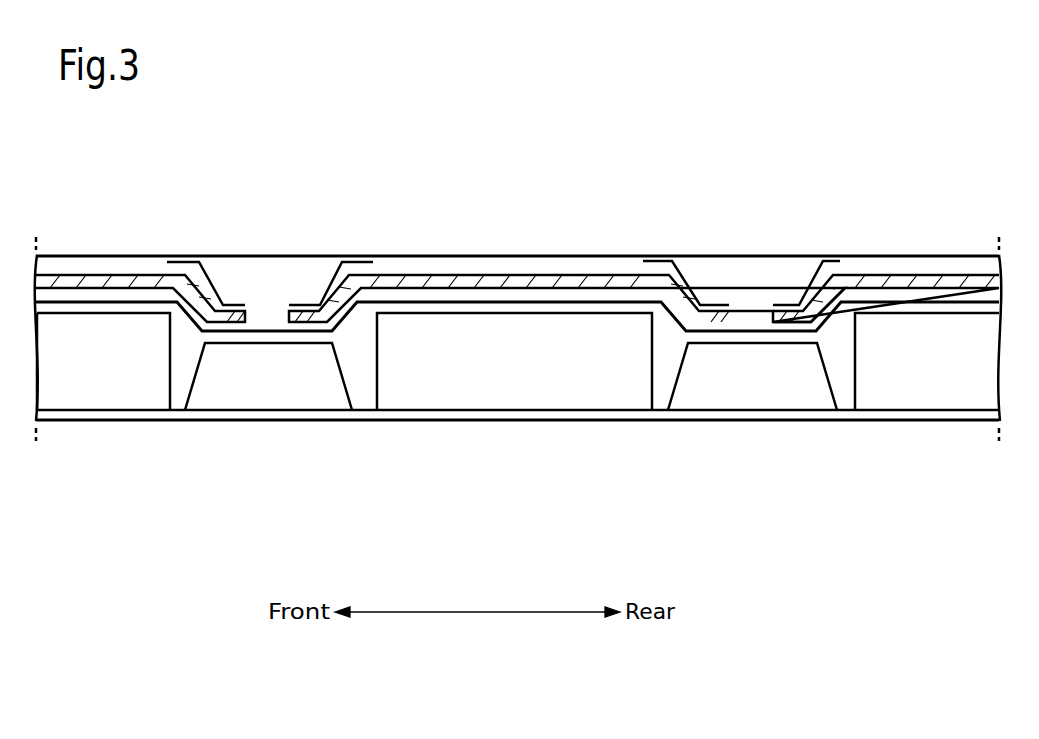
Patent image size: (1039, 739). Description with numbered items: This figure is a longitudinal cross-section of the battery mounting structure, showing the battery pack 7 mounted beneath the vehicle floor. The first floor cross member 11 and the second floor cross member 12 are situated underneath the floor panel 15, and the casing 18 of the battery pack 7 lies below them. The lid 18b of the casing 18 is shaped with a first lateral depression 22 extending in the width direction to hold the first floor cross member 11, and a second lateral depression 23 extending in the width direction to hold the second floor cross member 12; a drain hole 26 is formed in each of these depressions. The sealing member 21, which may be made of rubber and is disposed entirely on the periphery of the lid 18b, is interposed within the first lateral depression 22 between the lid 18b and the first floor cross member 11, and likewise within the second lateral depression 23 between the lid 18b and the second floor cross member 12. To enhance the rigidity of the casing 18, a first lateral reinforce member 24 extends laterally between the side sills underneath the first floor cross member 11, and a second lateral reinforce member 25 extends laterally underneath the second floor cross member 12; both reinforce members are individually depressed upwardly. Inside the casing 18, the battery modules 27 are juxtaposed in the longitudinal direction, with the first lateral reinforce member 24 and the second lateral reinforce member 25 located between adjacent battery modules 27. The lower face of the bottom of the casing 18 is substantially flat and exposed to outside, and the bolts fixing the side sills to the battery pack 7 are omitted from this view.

The battery pack 7 is at (892, 424).
The first floor cross member 11 is at (215, 287).
The second floor cross member 12 is at (817, 270).
The floor panel 15 is at (931, 255).
The casing 18 is at (686, 421).
The lid 18b is at (972, 297).
The sealing member 21 is at (494, 275).
The first lateral depression 22 is at (349, 303).
The second lateral depression 23 is at (668, 263).
The first lateral reinforce member 24 is at (347, 393).
The second lateral reinforce member 25 is at (832, 398).
The drain hole 26 is at (272, 306).
The battery module 27 is at (85, 393).